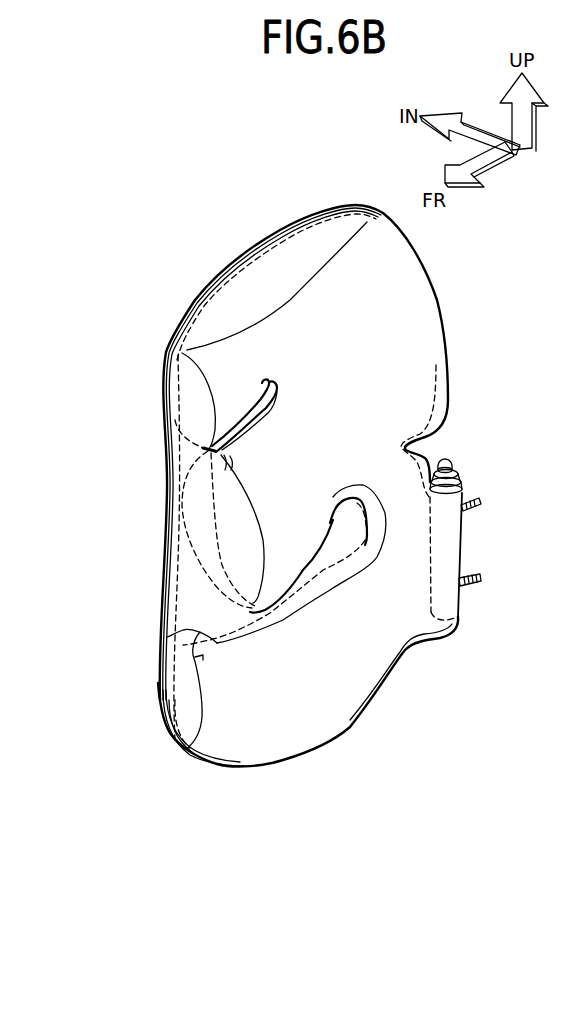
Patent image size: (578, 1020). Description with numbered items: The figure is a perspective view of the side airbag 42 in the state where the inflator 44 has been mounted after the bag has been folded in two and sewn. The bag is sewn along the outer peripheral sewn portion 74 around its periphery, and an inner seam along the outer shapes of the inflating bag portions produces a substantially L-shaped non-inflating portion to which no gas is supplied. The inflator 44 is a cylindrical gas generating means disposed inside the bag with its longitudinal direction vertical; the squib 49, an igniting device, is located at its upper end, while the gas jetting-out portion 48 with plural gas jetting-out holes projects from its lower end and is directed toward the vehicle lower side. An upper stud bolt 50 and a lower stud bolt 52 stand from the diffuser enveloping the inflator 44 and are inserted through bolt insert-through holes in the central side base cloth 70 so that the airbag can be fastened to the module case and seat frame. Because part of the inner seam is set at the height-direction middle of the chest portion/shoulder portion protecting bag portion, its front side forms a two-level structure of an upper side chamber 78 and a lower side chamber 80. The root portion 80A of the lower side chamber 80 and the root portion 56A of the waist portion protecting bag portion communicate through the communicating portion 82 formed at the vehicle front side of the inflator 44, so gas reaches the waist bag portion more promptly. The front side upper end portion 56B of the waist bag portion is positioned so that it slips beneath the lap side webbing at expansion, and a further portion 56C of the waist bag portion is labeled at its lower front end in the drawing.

The side airbag 42 is at (191, 277).
The upper side chamber 78 is at (193, 406).
The lower side chamber 80 is at (223, 530).
The outer peripheral sewn portion 74 is at (180, 572).
The front side upper end portion 56B is at (170, 637).
The partition seam end portion 56C is at (187, 708).
The root portion 56A is at (393, 597).
The gas jetting-out portion 48 is at (452, 616).
The central side base cloth 70 is at (447, 552).
The inflator 44 is at (460, 475).
The squib 49 is at (450, 460).
The stud bolt 50 is at (482, 503).
The stud bolt 52 is at (481, 578).
The communicating portion 82 is at (390, 467).
The root portion 80A is at (393, 410).